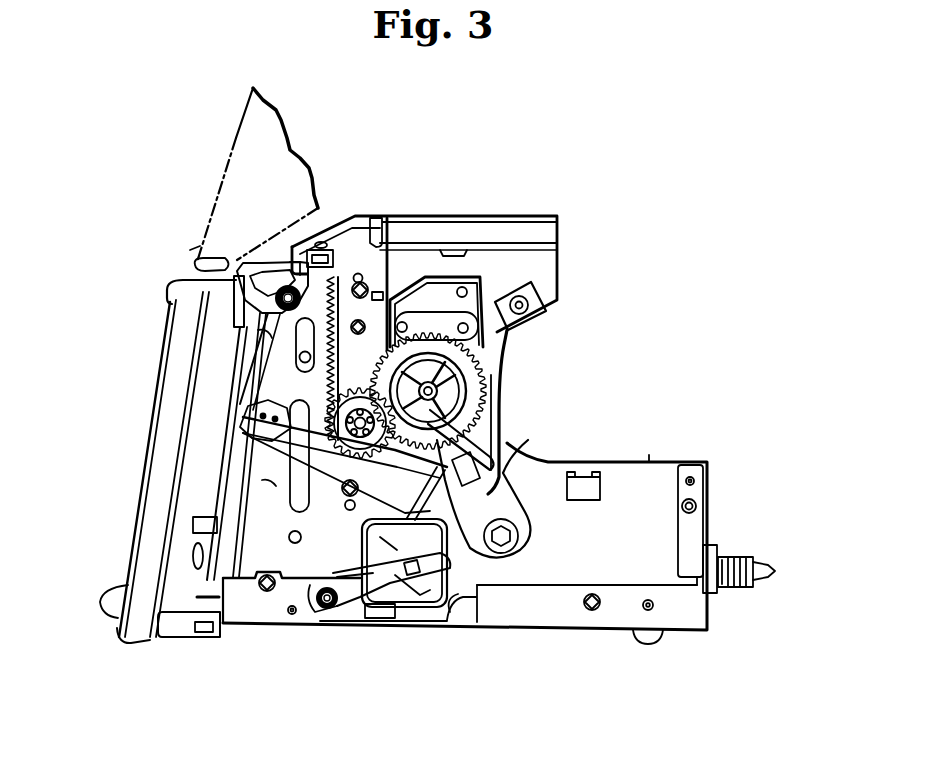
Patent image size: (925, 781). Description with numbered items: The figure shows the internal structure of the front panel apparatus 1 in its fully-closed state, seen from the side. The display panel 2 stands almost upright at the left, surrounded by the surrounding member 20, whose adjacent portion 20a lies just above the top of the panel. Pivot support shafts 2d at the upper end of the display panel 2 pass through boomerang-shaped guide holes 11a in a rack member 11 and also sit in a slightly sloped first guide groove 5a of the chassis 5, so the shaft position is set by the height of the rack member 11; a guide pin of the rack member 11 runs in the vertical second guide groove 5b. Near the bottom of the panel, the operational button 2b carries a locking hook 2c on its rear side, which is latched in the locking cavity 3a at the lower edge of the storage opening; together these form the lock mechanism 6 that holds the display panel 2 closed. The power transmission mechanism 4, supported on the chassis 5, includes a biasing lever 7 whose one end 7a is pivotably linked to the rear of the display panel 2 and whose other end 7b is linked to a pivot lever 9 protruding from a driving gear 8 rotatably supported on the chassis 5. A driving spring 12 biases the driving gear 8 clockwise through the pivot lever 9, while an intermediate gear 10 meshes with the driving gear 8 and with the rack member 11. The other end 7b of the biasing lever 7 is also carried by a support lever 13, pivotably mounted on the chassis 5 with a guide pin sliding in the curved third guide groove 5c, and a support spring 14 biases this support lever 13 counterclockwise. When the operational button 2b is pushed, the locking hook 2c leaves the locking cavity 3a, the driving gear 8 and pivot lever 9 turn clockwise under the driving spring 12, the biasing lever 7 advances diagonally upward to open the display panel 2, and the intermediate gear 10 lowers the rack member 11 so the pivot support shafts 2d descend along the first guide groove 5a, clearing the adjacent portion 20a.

The front panel apparatus 1 is at (578, 262).
The display panel 2 is at (175, 392).
The operational button 2b is at (110, 610).
The locking hook 2c is at (163, 641).
The pivot support shaft 2d is at (287, 273).
The locking cavity 3a is at (176, 640).
The power transmission mechanism 4 is at (430, 704).
The chassis 5 is at (615, 565).
The first guide groove 5a is at (262, 338).
The second guide groove 5b is at (275, 485).
The third guide groove 5c is at (463, 592).
The lock mechanism 6 is at (63, 665).
The biasing lever 7 is at (333, 470).
The one end of the biasing lever 7a is at (242, 426).
The other end of the biasing lever 7b is at (528, 497).
The driving gear 8 is at (430, 382).
The pivot lever 9 is at (500, 458).
The intermediate gear 10 is at (363, 388).
The rack member 11 is at (318, 283).
The guide hole 11a is at (194, 265).
The driving spring 12 is at (506, 420).
The support lever 13 is at (386, 570).
The support spring 14 is at (343, 612).
The surrounding member 20 is at (253, 127).
The adjacent portion 20a is at (196, 245).